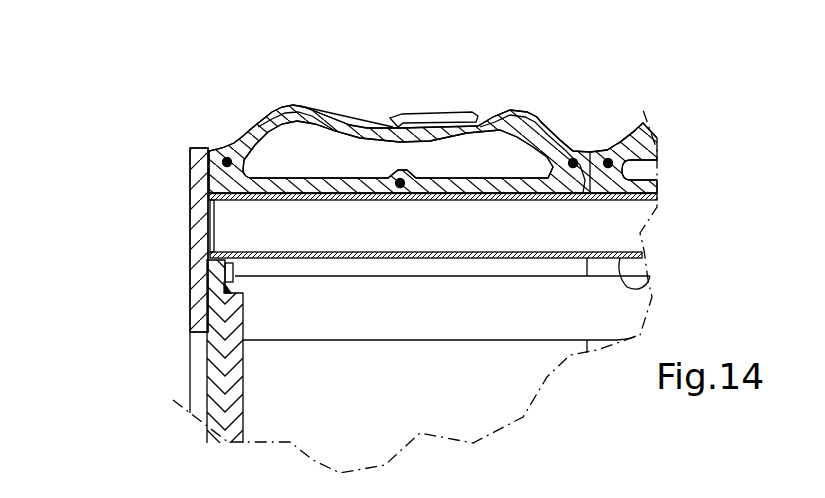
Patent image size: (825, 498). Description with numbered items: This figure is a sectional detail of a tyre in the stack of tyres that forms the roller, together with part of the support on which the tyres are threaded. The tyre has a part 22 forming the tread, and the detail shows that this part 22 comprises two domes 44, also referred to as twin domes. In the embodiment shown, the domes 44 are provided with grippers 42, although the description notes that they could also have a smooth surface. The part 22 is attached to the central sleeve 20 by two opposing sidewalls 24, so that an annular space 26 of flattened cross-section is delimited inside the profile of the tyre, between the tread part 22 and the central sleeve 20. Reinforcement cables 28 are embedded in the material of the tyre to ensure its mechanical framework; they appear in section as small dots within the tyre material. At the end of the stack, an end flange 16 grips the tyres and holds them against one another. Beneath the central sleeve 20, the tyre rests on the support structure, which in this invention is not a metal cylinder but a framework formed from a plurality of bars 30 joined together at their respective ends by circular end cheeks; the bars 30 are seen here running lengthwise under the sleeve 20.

The end flange 16 is at (190, 308).
The central sleeve 20 is at (467, 200).
The part forming the tread 22 is at (360, 127).
The sidewall 24 is at (540, 126).
The annular space 26 is at (312, 166).
The reinforcement cable 28 is at (224, 160).
The bar 30 is at (650, 277).
The gripper 42 is at (322, 113).
The dome 44 is at (297, 112).